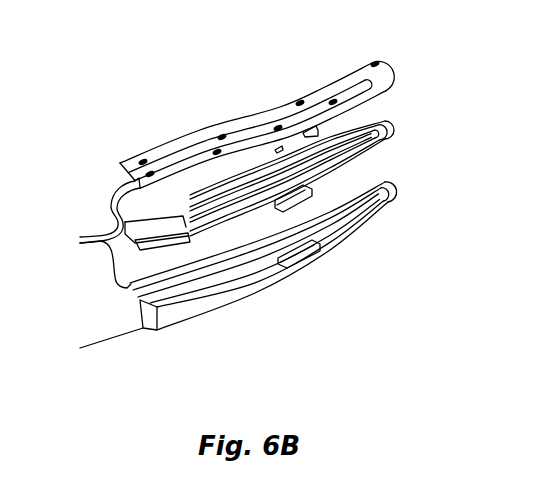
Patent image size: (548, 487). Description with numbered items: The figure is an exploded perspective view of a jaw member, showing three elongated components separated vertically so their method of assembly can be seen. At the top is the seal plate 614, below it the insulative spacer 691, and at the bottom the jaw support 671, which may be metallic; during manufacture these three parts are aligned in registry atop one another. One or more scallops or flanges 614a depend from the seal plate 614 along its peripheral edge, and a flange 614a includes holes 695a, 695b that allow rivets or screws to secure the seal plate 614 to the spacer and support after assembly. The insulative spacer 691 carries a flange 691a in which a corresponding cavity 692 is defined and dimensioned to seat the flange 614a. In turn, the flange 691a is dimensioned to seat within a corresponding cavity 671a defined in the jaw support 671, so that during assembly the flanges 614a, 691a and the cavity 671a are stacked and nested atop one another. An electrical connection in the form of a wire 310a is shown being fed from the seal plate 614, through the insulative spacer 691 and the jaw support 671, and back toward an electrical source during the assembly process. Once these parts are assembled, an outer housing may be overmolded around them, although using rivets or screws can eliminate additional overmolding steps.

The seal plate 614 is at (336, 78).
The flange 614a is at (317, 130).
The hole 695a is at (282, 117).
The hole 695b is at (272, 118).
The insulative spacer 691 is at (382, 127).
The flange 691a is at (391, 193).
The jaw support 671 is at (350, 244).
The cavity 671a is at (293, 247).
The cavity 692 is at (288, 197).
The wire 310a is at (122, 185).